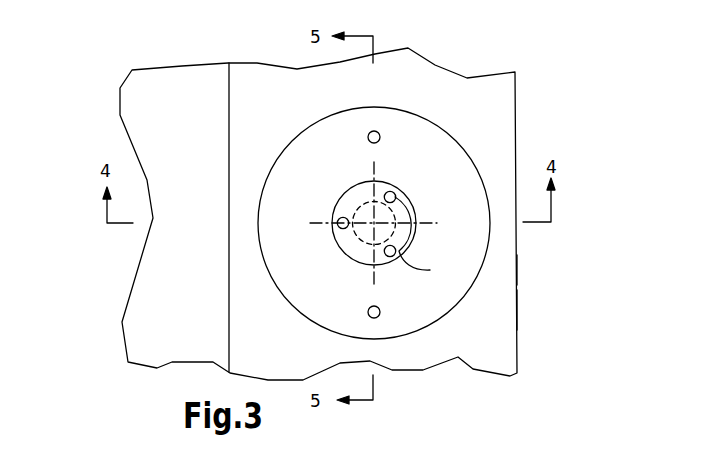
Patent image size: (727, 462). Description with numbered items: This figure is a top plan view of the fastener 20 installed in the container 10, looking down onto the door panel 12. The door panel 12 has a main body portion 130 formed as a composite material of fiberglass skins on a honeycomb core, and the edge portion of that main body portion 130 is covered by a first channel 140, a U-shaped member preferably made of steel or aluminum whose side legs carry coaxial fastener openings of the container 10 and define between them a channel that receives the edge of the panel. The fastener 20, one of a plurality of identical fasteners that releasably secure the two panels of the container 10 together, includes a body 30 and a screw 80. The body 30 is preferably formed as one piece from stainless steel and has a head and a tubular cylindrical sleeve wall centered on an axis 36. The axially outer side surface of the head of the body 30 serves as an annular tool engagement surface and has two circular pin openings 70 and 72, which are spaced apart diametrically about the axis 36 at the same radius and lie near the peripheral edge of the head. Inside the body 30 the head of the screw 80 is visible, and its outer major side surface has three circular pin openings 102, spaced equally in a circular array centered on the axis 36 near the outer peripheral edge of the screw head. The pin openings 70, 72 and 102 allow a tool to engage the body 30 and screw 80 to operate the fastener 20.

The container 10 is at (529, 347).
The door panel 12 is at (529, 314).
The fastener 20 is at (269, 310).
The body 30 is at (252, 267).
The axis 36 is at (374, 223).
The pin opening 70 is at (368, 134).
The pin opening 72 is at (378, 316).
The screw 80 is at (413, 193).
The pin openings 102 is at (430, 239).
The main body portion 130 is at (146, 336).
The first channel 140 is at (529, 271).